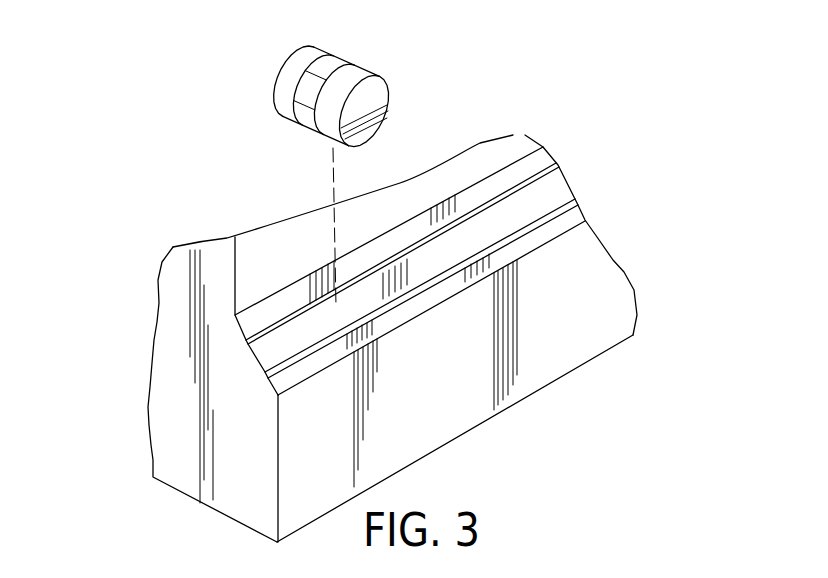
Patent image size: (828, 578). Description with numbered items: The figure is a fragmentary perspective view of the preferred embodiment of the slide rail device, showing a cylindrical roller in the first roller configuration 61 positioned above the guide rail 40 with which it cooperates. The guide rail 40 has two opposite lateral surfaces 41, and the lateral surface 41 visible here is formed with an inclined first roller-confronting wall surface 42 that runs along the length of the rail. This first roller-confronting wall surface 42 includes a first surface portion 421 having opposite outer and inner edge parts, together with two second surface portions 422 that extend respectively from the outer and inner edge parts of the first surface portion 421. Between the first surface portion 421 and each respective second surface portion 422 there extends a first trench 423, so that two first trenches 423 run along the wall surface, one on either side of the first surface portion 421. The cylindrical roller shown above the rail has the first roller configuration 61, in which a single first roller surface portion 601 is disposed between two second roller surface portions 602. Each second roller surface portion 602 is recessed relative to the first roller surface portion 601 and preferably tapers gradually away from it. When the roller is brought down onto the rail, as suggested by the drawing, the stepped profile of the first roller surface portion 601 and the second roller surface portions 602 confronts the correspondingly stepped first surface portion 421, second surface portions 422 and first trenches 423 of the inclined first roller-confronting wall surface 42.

The guide rail 40 is at (158, 388).
The lateral surface 41 is at (460, 372).
The first roller-confronting wall surface 42 is at (257, 357).
The first surface portion 421 is at (555, 190).
The second surface portion 422 is at (542, 152).
The first trench 423 is at (310, 298).
The first roller configuration 61 is at (262, 97).
The first roller surface portion 601 is at (345, 60).
The second roller surface portion 602 is at (290, 68).